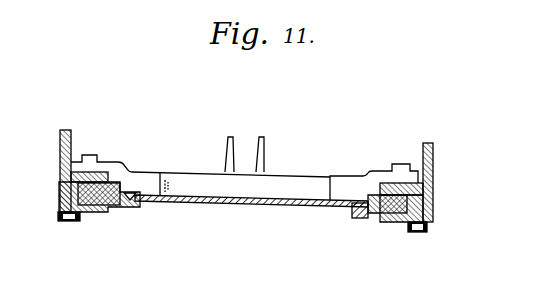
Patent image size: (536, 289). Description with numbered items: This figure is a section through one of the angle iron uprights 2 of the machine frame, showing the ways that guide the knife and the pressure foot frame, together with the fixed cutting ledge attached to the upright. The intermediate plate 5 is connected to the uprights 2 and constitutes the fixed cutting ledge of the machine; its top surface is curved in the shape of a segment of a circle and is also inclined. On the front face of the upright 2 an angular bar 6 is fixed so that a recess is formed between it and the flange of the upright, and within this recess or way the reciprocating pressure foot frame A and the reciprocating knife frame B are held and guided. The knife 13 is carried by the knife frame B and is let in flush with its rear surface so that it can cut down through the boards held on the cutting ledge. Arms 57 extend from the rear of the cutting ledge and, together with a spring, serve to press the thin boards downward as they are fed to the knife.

The angle iron upright 2 is at (434, 170).
The intermediate plate 5 is at (294, 181).
The arms 57 is at (250, 149).
The knife 13 is at (252, 205).
The angular bar 6 is at (434, 203).
The pressure foot frame A is at (373, 196).
The knife frame B is at (372, 217).